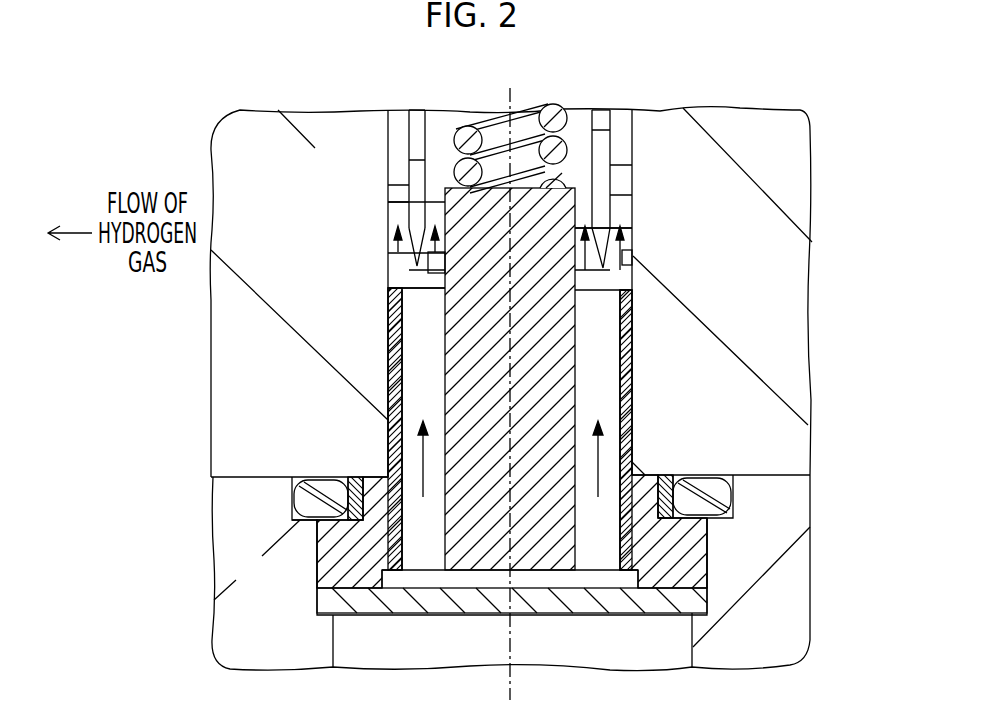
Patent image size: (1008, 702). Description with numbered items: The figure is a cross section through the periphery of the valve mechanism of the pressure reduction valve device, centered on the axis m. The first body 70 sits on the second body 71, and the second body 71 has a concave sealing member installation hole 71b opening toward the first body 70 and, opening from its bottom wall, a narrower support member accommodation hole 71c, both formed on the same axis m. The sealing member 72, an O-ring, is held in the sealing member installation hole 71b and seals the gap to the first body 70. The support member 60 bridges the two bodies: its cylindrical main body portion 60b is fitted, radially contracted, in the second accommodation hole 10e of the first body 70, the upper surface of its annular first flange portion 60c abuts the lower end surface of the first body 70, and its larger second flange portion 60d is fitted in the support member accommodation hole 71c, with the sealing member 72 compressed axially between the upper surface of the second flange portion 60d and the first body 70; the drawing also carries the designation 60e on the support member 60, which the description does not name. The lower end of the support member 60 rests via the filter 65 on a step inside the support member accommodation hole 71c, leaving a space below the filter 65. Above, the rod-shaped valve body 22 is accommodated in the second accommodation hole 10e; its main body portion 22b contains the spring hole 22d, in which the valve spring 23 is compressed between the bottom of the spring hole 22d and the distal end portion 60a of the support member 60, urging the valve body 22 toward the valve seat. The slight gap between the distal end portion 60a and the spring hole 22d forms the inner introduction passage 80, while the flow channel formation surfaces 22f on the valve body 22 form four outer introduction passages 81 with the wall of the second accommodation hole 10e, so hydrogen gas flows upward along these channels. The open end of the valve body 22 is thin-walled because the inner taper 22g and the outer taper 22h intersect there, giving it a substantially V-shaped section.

The second accommodation hole 10e is at (632, 253).
The valve body 22 is at (413, 128).
The main body portion 22b is at (412, 125).
The spring hole 22d is at (586, 128).
The flow channel formation surfaces 22f is at (418, 162).
The taper 22g is at (423, 318).
The taper 22h is at (405, 258).
The valve spring 23 is at (598, 130).
The support member 60 is at (368, 338).
The distal end portion 60a is at (612, 226).
The main body portion 60b is at (515, 400).
The first flange portion 60c is at (641, 529).
The second flange portion 60d is at (693, 531).
The passage 60e is at (413, 393).
The filter 65 is at (700, 592).
The first body 70 is at (812, 247).
The second body 71 is at (797, 578).
The sealing member installation hole 71b is at (292, 493).
The support member accommodation hole 71c is at (317, 578).
The sealing member 72 is at (737, 503).
The inner introduction passage 80 is at (389, 222).
The outer introduction passages 81 is at (392, 200).
The axis m is at (510, 380).